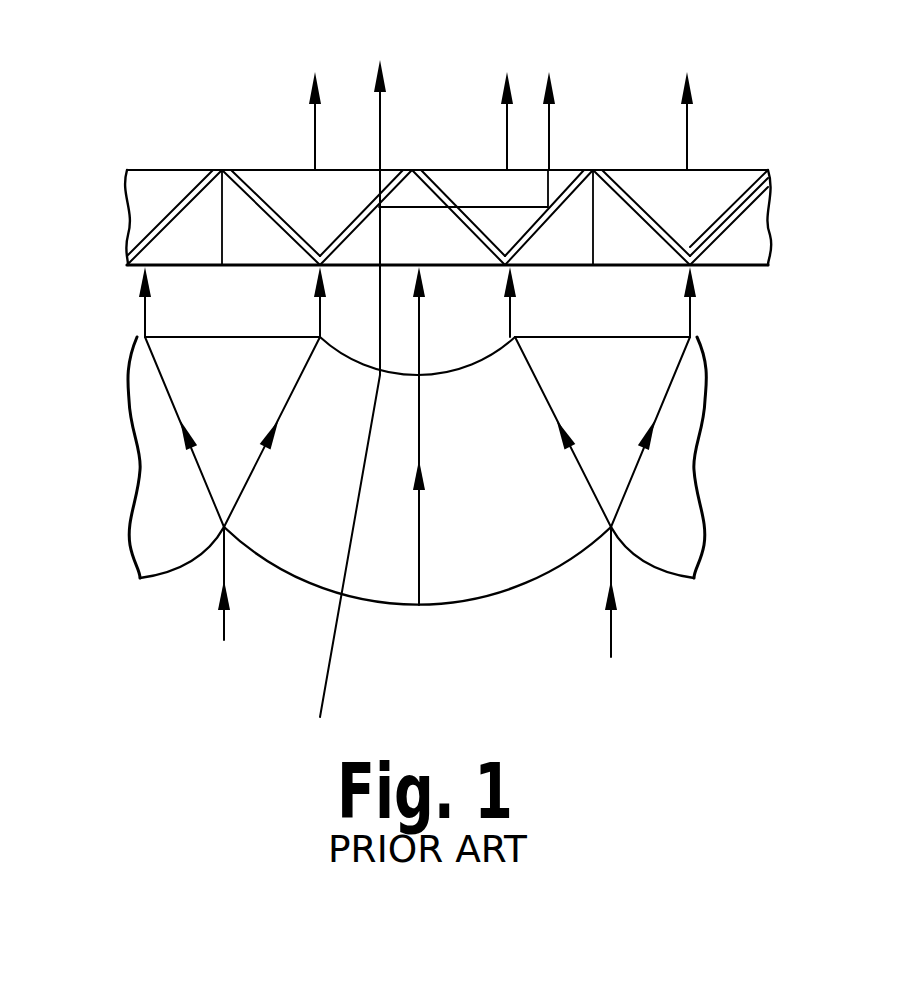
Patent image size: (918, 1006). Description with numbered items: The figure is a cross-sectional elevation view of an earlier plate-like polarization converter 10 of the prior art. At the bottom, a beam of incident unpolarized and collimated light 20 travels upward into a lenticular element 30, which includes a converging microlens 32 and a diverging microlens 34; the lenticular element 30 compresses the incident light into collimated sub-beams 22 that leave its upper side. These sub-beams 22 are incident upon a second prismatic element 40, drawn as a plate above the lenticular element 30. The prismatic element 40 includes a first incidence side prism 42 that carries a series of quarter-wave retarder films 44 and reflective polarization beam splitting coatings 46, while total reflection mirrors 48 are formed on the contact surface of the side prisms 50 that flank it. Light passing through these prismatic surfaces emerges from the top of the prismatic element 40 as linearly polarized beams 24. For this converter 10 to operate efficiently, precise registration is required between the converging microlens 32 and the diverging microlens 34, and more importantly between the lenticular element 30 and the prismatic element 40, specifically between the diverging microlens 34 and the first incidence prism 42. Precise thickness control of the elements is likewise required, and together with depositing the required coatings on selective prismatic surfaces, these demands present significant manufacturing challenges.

The plate-like polarization converter 10 is at (64, 132).
The incident unpolarized and collimated light 20 is at (612, 633).
The collimated sub-beams 22 is at (690, 314).
The linearly polarized beams 24 is at (508, 128).
The lenticular element 30 is at (680, 390).
The converging microlens 32 is at (403, 605).
The diverging microlens 34 is at (352, 357).
The second prismatic element 40 is at (760, 222).
The first incidence side prism 42 is at (457, 247).
The quarter-wave retarder films 44 is at (382, 203).
The reflective polarization beam splitting coatings 46 is at (390, 180).
The total reflection mirrors 48 is at (260, 193).
The side prisms 50 is at (238, 227).